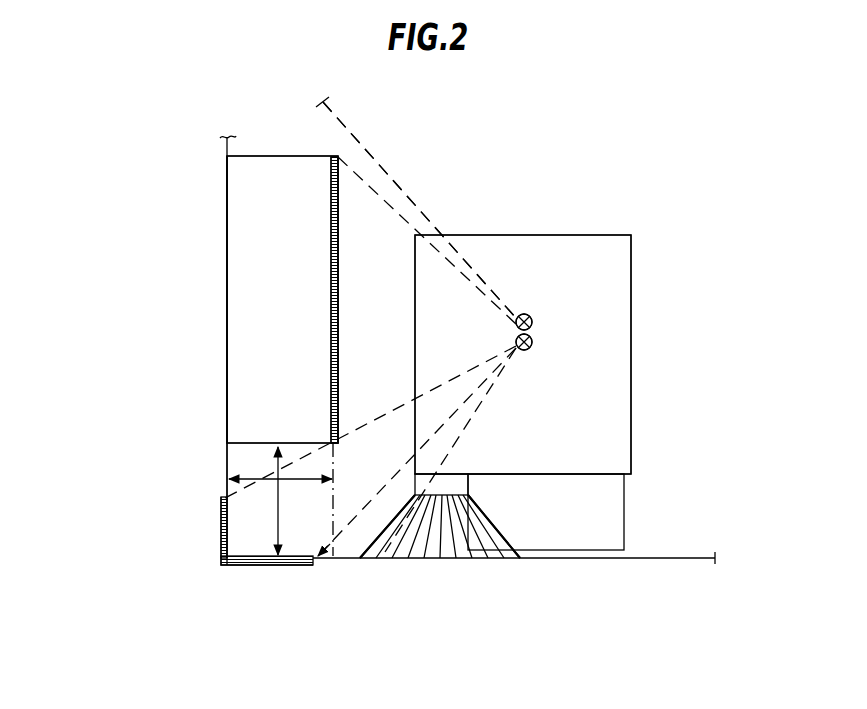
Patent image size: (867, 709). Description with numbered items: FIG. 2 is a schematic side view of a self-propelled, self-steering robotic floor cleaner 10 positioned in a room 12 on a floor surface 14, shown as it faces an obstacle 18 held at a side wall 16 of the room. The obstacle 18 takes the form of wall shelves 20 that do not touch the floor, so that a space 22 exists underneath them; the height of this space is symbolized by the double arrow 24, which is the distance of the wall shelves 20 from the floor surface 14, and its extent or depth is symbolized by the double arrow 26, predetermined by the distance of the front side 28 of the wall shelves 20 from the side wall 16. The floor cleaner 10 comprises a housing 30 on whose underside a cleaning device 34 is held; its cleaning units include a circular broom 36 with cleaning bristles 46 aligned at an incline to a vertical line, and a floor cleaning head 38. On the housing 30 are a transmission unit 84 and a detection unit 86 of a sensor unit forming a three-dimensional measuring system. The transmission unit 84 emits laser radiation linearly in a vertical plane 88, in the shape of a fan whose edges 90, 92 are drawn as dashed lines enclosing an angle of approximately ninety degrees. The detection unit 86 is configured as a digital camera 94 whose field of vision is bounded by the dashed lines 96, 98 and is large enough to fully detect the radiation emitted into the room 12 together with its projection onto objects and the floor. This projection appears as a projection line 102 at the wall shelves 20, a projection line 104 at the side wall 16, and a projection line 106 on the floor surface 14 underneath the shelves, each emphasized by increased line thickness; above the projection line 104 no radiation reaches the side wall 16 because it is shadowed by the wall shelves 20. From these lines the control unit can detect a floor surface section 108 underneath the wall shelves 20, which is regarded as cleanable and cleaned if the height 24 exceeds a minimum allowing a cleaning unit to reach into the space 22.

The floor cleaner 10 is at (620, 227).
The room 12 is at (175, 278).
The floor surface 14 is at (683, 558).
The side wall 16 is at (227, 356).
The obstacle 18 is at (281, 185).
The wall shelves 20 is at (248, 208).
The space 22 is at (262, 518).
The height 24 is at (258, 498).
The depth 26 is at (258, 473).
The front side 28 is at (338, 348).
The housing 30 is at (636, 341).
The cleaning device 34 is at (494, 496).
The circular broom 36 is at (445, 482).
The floor cleaning head 38 is at (613, 520).
The cleaning bristles 46 is at (413, 537).
The transmission unit 84 is at (533, 343).
The detection unit 86 is at (525, 313).
The plane 88 is at (385, 193).
The edge of emission field 90 is at (453, 271).
The edge of emission field 92 is at (387, 473).
The digital camera 94 is at (533, 318).
The field of vision line 96 is at (412, 195).
The field of vision line 98 is at (455, 441).
The projection line 102 is at (331, 272).
The projection line 104 is at (221, 535).
The projection line 106 is at (262, 565).
The floor surface section 108 is at (352, 537).